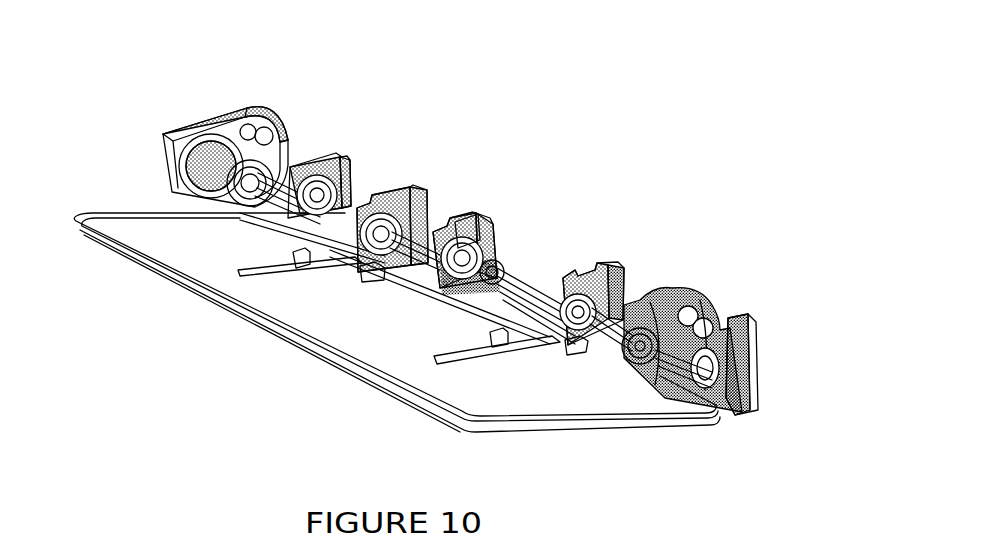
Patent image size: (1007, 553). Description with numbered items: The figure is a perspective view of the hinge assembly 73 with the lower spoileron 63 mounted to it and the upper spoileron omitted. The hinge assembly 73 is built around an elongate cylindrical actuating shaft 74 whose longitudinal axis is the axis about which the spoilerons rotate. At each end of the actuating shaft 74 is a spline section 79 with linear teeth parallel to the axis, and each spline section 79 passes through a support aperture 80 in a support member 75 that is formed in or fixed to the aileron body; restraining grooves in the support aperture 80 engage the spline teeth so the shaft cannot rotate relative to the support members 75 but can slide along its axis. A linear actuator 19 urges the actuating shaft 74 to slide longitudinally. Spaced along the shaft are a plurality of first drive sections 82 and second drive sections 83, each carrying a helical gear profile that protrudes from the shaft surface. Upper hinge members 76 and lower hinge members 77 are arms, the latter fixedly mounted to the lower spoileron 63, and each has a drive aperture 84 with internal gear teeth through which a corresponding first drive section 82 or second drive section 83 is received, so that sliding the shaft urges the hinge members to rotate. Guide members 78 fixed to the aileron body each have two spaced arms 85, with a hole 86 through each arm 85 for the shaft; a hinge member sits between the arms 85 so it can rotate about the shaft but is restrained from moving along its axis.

The linear actuator 19 is at (214, 158).
The lower spoileron 63 is at (375, 339).
The hinge assembly 73 is at (600, 124).
The actuating shaft 74 is at (497, 280).
The support member 75 is at (328, 173).
The upper hinge member 76 is at (584, 356).
The lower hinge member 77 is at (513, 340).
The guide member 78 is at (620, 276).
The spline section 79 is at (266, 180).
The support aperture 80 is at (710, 366).
The first drive section 82 is at (448, 218).
The second drive section 83 is at (344, 214).
The drive aperture 84 is at (490, 250).
The arm 85 is at (478, 236).
The hole 86 is at (657, 332).